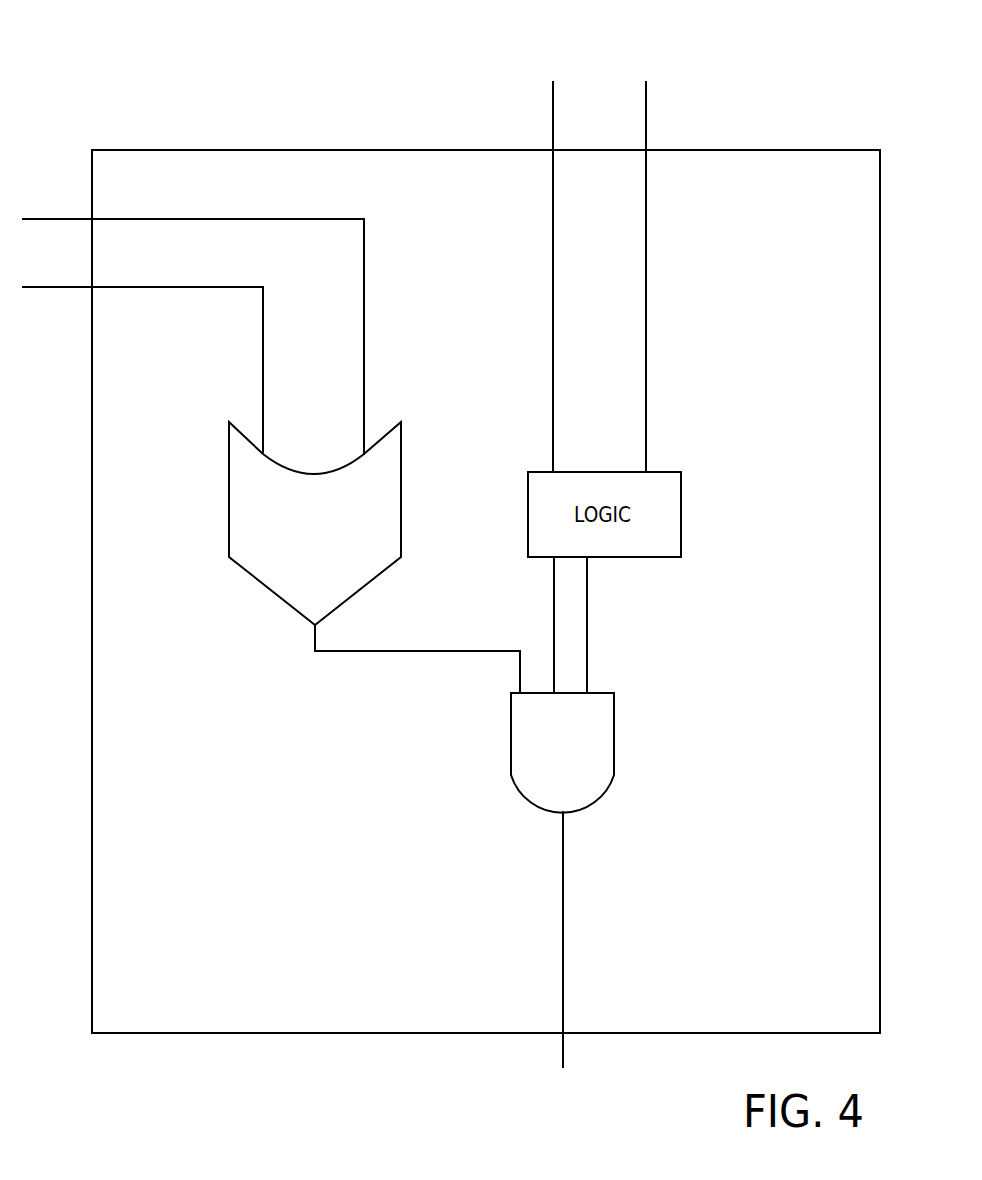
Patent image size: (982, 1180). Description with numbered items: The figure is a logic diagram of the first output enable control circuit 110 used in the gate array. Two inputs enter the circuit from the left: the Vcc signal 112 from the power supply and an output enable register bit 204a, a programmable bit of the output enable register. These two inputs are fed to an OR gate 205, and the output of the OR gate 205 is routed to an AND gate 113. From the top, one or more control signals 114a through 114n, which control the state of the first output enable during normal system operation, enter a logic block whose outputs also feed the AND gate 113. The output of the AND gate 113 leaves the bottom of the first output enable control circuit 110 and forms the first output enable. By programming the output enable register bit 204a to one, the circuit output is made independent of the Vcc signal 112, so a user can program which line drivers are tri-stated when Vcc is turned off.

The first output enable control circuit 110 is at (844, 1012).
The Vcc signal 112 is at (64, 216).
The output enable register bit 204a is at (63, 286).
The control signal 114a is at (551, 132).
The control signal 114n is at (646, 132).
The OR gate 205 is at (327, 543).
The AND gate 113 is at (573, 755).